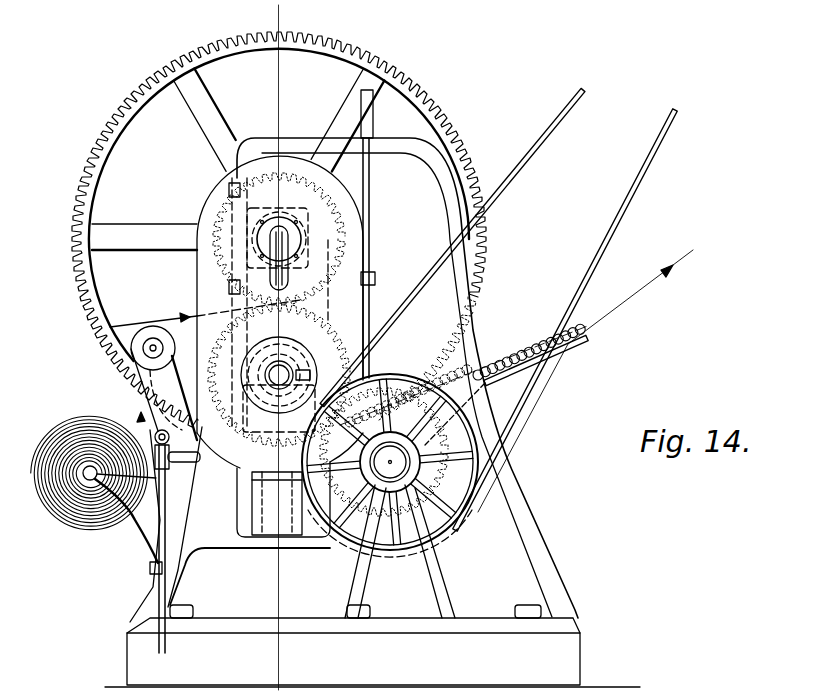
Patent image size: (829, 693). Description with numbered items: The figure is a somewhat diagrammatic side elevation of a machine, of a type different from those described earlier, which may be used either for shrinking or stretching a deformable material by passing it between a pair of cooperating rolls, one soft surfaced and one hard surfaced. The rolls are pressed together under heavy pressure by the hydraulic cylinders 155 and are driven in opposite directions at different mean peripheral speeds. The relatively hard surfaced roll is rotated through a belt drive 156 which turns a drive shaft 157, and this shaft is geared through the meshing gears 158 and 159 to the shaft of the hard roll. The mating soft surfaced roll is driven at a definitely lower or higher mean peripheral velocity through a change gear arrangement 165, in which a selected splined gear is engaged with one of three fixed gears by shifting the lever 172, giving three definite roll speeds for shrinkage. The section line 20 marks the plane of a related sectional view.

The section line 20- 20 is at (317, 672).
The hydraulic cylinders 155 is at (254, 512).
The belt drive 156 is at (540, 392).
The drive shaft 157 is at (398, 542).
The meshing gear 158 is at (476, 346).
The meshing gear 159 is at (488, 244).
The change gear arrangement 165 is at (357, 257).
The lever 172 is at (366, 213).